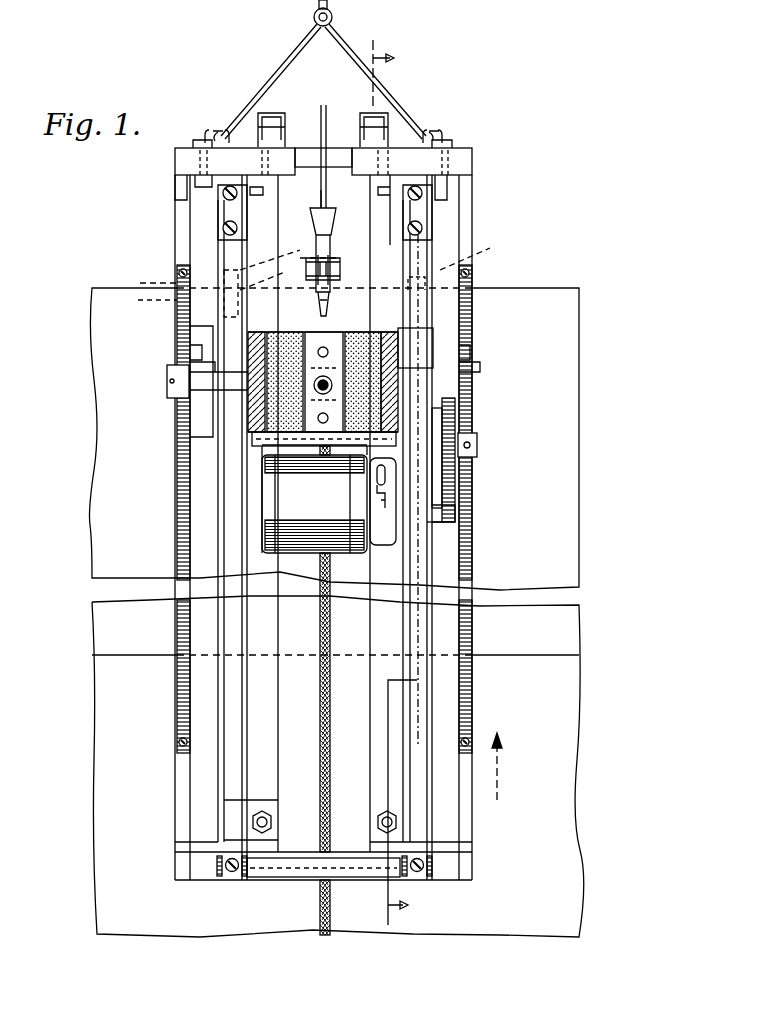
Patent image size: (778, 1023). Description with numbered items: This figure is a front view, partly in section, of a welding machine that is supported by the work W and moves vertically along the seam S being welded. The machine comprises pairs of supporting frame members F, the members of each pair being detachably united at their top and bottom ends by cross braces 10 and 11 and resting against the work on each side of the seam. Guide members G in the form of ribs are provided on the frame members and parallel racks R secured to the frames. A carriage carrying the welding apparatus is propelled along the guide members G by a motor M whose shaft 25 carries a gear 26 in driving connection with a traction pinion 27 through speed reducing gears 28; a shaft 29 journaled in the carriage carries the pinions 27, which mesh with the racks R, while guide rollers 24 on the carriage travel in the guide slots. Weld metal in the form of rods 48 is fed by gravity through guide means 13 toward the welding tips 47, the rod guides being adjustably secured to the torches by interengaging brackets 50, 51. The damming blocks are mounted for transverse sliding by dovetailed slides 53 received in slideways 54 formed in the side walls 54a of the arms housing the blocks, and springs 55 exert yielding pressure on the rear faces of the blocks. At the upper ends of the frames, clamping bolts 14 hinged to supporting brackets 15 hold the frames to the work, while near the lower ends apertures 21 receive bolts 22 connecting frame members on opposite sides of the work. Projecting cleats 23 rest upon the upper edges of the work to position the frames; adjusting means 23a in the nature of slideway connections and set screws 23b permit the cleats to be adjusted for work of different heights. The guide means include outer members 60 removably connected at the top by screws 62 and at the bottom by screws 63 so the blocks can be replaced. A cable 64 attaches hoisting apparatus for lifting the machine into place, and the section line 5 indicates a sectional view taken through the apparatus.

The section line 5- 5 is at (397, 482).
The cross brace 10 is at (327, 150).
The cross brace 11 is at (352, 878).
The guide means 13 is at (331, 244).
The clamping bolts 14 is at (268, 113).
The supporting brackets 15 is at (250, 130).
The apertures 21 is at (273, 813).
The bolts 22 is at (272, 822).
The projecting cleats 23 is at (370, 263).
The adjusting means 23a is at (226, 264).
The set screws 23b is at (206, 293).
The guide rollers 24 is at (200, 330).
The shaft 25 is at (432, 528).
The gear 26 is at (456, 515).
The traction pinion 27 is at (190, 365).
The speed reducing gears 28 is at (460, 430).
The shaft 29 is at (190, 350).
The welding tips 47 is at (331, 314).
The welding rods 48 is at (328, 197).
The bracket 50 is at (320, 303).
The bracket 51 is at (341, 268).
The dovetailed slides 53 is at (372, 334).
The slideways 54 is at (272, 345).
The side walls 54a is at (245, 383).
The springs 55 is at (336, 455).
The outer members 60 is at (240, 185).
The screws 62 is at (223, 228).
The screws 63 is at (232, 873).
The cable 64 is at (300, 48).
The supporting frame members F is at (203, 817).
The guide members G is at (230, 465).
The motors M is at (314, 499).
The racks R is at (182, 537).
The seam S is at (330, 936).
The work W is at (112, 479).